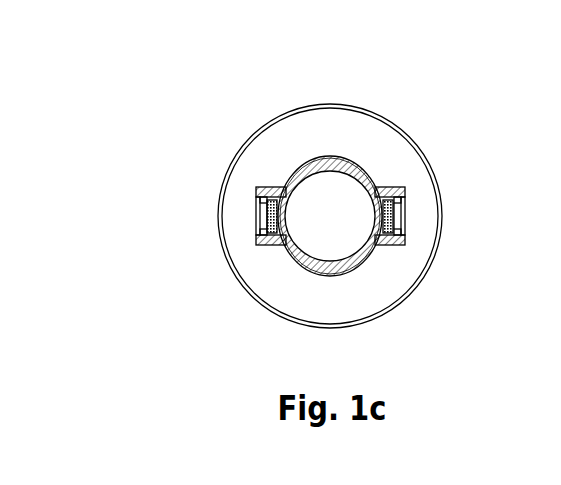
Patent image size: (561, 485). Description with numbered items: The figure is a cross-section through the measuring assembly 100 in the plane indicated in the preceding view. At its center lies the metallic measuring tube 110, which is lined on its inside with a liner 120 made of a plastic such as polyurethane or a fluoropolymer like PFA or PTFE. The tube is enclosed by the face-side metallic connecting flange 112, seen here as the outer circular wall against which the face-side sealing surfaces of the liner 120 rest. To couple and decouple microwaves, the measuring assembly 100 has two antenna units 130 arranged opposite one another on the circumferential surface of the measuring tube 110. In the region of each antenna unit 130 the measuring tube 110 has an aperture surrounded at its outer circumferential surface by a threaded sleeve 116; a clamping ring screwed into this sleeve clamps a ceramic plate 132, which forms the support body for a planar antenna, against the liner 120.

The measuring assembly 100 is at (190, 87).
The measuring tube 110 is at (365, 165).
The connecting flanges 112 is at (298, 123).
The threaded sleeve 116 is at (266, 188).
The liner 120 is at (318, 258).
The antenna units 130 is at (233, 217).
The ceramic plate 132 is at (273, 208).